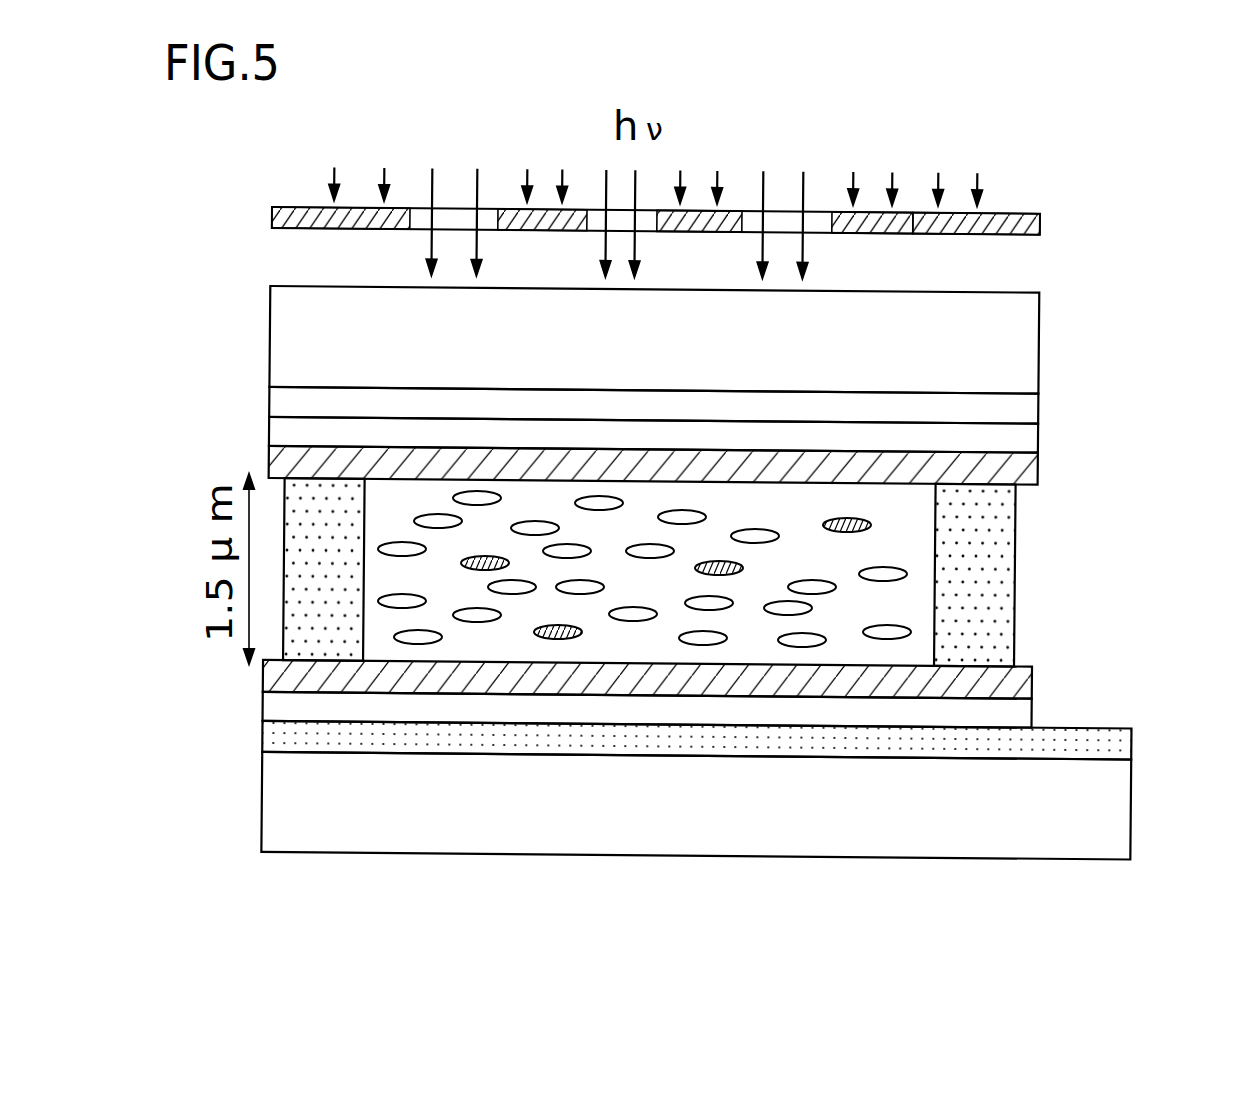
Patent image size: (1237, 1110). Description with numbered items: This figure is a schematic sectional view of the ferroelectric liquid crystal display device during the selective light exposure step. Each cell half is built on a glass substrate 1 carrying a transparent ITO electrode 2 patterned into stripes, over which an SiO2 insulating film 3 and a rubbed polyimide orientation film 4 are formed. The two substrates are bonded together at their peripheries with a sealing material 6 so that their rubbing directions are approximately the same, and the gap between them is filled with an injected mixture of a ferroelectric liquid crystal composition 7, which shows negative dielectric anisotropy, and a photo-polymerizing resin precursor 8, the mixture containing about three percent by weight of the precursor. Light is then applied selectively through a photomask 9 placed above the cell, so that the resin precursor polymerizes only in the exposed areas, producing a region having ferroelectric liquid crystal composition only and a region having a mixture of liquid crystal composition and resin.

The substrate 1 is at (1020, 333).
The electrode 2 is at (1022, 408).
The insulating film 3 is at (1028, 440).
The orientation film 4 is at (1025, 467).
The sealing material 6 is at (1010, 556).
The liquid crystal composition 7 is at (884, 632).
The photo-polymerizing resin precursor 8 is at (563, 638).
The photomask 9 is at (1020, 224).